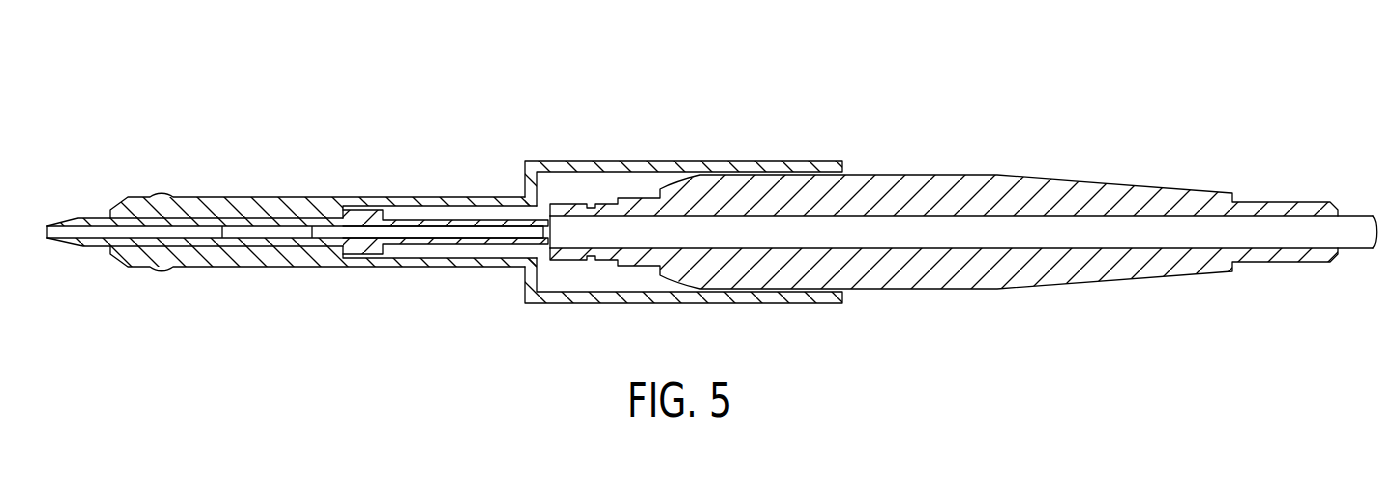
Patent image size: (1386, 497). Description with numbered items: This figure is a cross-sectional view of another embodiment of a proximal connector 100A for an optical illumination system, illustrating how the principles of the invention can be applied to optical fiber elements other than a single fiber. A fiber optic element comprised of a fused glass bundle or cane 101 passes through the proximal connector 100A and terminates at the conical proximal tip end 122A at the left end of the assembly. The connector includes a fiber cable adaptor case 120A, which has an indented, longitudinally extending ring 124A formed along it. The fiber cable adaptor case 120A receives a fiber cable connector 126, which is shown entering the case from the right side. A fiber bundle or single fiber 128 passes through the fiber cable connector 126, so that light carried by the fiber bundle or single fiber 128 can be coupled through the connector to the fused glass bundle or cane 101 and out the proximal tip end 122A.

The proximal connector 100A is at (353, 148).
The conical proximal tip end 122A is at (88, 217).
The indented, longitudinally extending ring 124A is at (168, 197).
The fused glass bundle or cane 101 is at (253, 236).
The fiber cable adaptor case 120A is at (600, 161).
The fiber cable connector 126 is at (1057, 176).
The fiber bundle or single fiber 128 is at (915, 228).